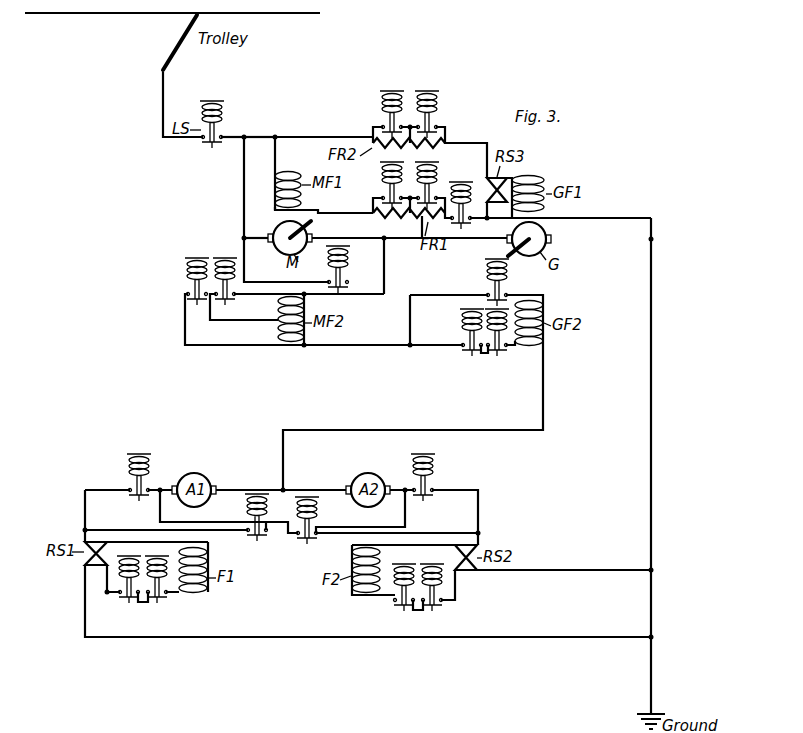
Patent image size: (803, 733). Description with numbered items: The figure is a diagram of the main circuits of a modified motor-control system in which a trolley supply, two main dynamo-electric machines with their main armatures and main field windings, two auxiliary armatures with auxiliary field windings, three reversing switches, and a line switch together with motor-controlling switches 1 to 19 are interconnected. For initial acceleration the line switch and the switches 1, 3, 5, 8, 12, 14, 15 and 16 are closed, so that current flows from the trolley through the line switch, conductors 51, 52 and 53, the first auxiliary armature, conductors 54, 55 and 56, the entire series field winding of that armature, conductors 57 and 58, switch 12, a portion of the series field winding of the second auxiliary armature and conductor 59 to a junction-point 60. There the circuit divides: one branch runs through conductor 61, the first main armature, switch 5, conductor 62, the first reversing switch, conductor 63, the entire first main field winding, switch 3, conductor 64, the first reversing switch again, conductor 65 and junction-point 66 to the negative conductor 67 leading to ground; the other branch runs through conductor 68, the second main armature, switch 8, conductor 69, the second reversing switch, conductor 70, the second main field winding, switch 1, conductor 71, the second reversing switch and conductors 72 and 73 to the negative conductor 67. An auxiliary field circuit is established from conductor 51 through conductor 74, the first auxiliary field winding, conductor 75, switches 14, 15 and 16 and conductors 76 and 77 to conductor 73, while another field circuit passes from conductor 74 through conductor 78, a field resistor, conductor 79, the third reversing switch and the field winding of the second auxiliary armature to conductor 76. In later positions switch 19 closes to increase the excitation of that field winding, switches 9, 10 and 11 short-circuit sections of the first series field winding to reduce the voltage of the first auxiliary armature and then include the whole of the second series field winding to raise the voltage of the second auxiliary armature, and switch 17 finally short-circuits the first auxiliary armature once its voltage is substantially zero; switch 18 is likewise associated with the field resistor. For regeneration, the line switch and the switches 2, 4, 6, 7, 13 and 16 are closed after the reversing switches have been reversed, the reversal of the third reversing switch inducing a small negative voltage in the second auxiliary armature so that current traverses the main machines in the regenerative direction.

The motor-controlling switch 1 is at (403, 607).
The motor-controlling switch 2 is at (432, 607).
The motor-controlling switch 3 is at (158, 604).
The motor-controlling switch 4 is at (128, 604).
The motor-controlling switch 5 is at (139, 492).
The motor-controlling switch 6 is at (257, 537).
The motor-controlling switch 7 is at (306, 540).
The motor-controlling switch 8 is at (424, 496).
The motor-controlling switch 9 is at (195, 298).
The motor-controlling switch 10 is at (225, 298).
The motor-controlling switch 11 is at (500, 356).
The motor-controlling switch 12 is at (473, 356).
The motor-controlling switch 13 is at (508, 291).
The motor-controlling switch 14 is at (381, 169).
The motor-controlling switch 15 is at (439, 173).
The motor-controlling switch 16 is at (456, 191).
The motor-controlling switch 17 is at (348, 265).
The motor-controlling switch 18 is at (381, 103).
The motor-controlling switch 19 is at (438, 103).
The conductor 51 is at (231, 130).
The conductor 52 is at (243, 186).
The conductor 53 is at (258, 227).
The conductor 54 is at (330, 241).
The conductor 55 is at (384, 252).
The conductor 56 is at (375, 296).
The conductor 57 is at (377, 347).
The conductor 58 is at (443, 348).
The conductor 59 is at (544, 382).
The junction-point 60 is at (295, 482).
The conductor 61 is at (260, 486).
The conductor 62 is at (102, 488).
The conductor 63 is at (175, 544).
The conductor 64 is at (106, 591).
The conductor 65 is at (140, 640).
The junction-point 66 is at (648, 642).
The negative conductor 67 is at (650, 695).
The conductor 68 is at (314, 479).
The conductor 69 is at (458, 508).
The conductor 70 is at (445, 547).
The conductor 71 is at (456, 600).
The conductor 72 is at (576, 571).
The conductor 73 is at (652, 608).
The conductor 74 is at (259, 129).
The conductor 75 is at (355, 213).
The conductor 76 is at (507, 220).
The conductor 77 is at (652, 310).
The conductor 78 is at (334, 136).
The conductor 79 is at (455, 144).